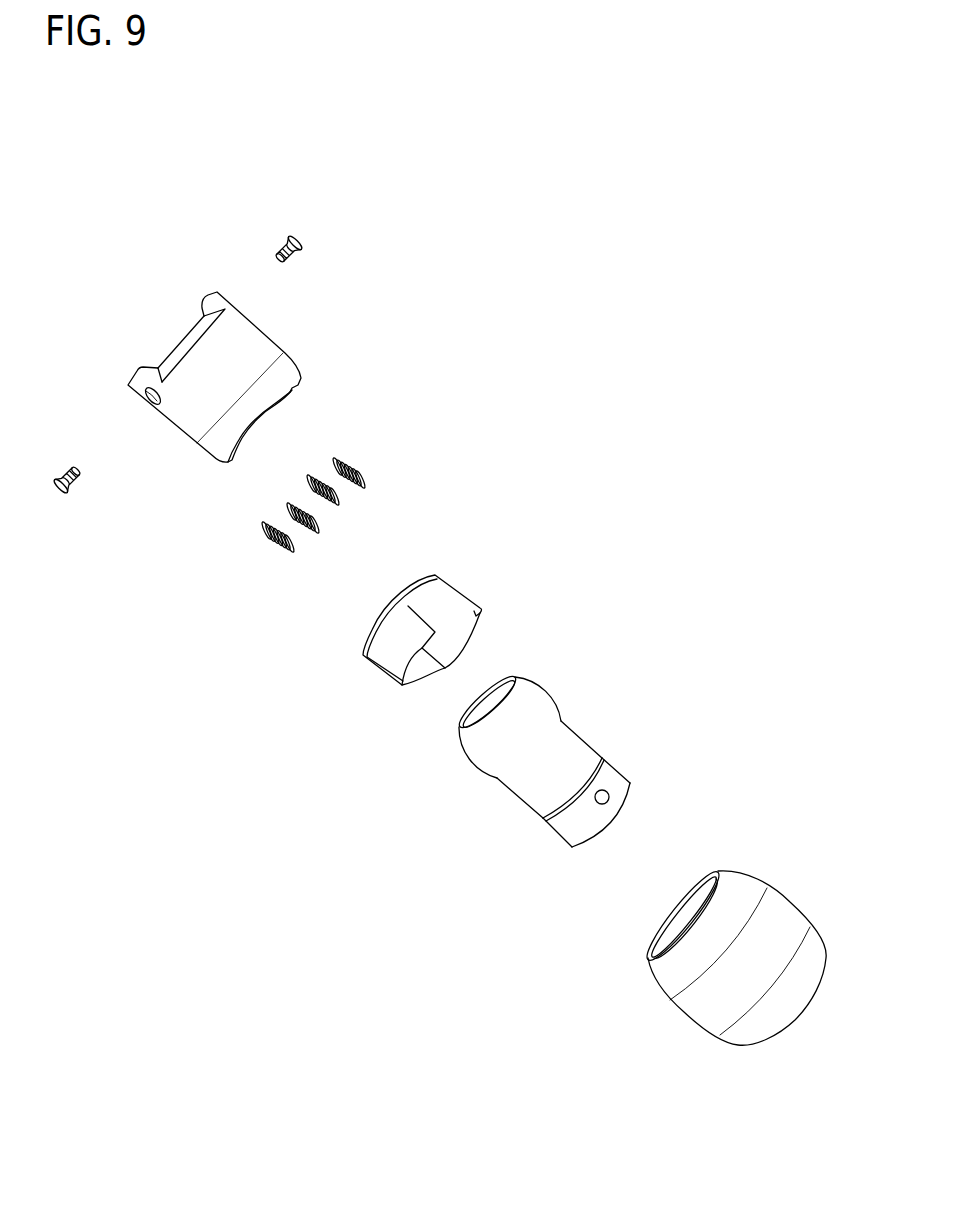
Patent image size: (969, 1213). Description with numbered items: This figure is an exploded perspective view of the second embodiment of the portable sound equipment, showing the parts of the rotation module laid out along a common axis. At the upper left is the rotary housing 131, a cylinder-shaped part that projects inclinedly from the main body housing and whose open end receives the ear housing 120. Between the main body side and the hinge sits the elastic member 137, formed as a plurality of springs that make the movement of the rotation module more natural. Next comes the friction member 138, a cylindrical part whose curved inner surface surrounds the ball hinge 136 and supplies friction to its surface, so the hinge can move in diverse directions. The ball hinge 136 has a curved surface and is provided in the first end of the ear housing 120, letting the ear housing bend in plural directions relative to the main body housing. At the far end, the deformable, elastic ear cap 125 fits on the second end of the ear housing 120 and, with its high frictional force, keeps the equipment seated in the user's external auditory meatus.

The rotary housing 131 is at (253, 343).
The elastic member 137 is at (355, 463).
The friction member 138 is at (447, 597).
The ball hinge 136 is at (533, 700).
The ear housing 120 is at (572, 753).
The ear cap 125 is at (783, 912).